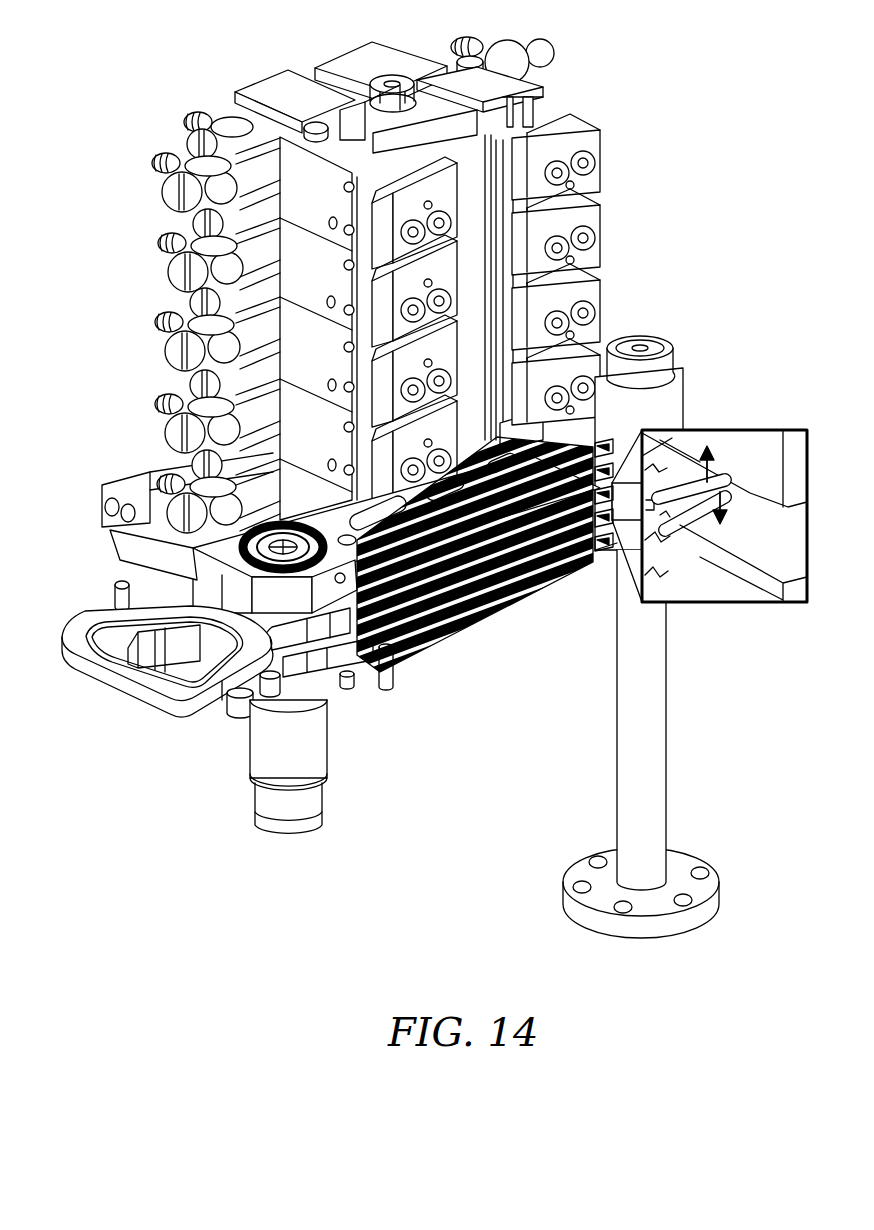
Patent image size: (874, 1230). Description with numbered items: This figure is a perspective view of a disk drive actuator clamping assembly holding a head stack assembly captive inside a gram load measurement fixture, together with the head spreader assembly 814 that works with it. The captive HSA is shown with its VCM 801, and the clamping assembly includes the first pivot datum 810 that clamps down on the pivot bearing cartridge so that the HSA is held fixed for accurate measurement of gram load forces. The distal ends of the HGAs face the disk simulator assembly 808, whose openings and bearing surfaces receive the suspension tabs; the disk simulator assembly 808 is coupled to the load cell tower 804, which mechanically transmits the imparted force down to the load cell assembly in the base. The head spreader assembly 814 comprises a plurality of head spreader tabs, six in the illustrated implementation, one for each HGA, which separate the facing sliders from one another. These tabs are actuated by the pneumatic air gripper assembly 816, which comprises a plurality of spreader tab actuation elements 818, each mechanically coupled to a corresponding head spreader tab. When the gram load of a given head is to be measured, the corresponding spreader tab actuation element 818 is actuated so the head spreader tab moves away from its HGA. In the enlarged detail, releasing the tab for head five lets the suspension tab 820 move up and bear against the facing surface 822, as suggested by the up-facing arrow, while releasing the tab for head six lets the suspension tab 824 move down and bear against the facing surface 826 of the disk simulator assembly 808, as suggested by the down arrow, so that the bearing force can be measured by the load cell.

The VCM 801 is at (150, 714).
The load cell tower 804 is at (618, 823).
The disk simulator assembly 808 is at (690, 410).
The first pivot datum 810 is at (305, 832).
The head spreader assembly 814 is at (95, 398).
The pneumatic air gripper assembly 816 is at (150, 208).
The spreader tab actuation elements 818 is at (375, 208).
The suspension tab 820 is at (712, 478).
The facing surface 822 is at (752, 500).
The suspension tab 824 is at (703, 510).
The facing surface 826 is at (730, 530).